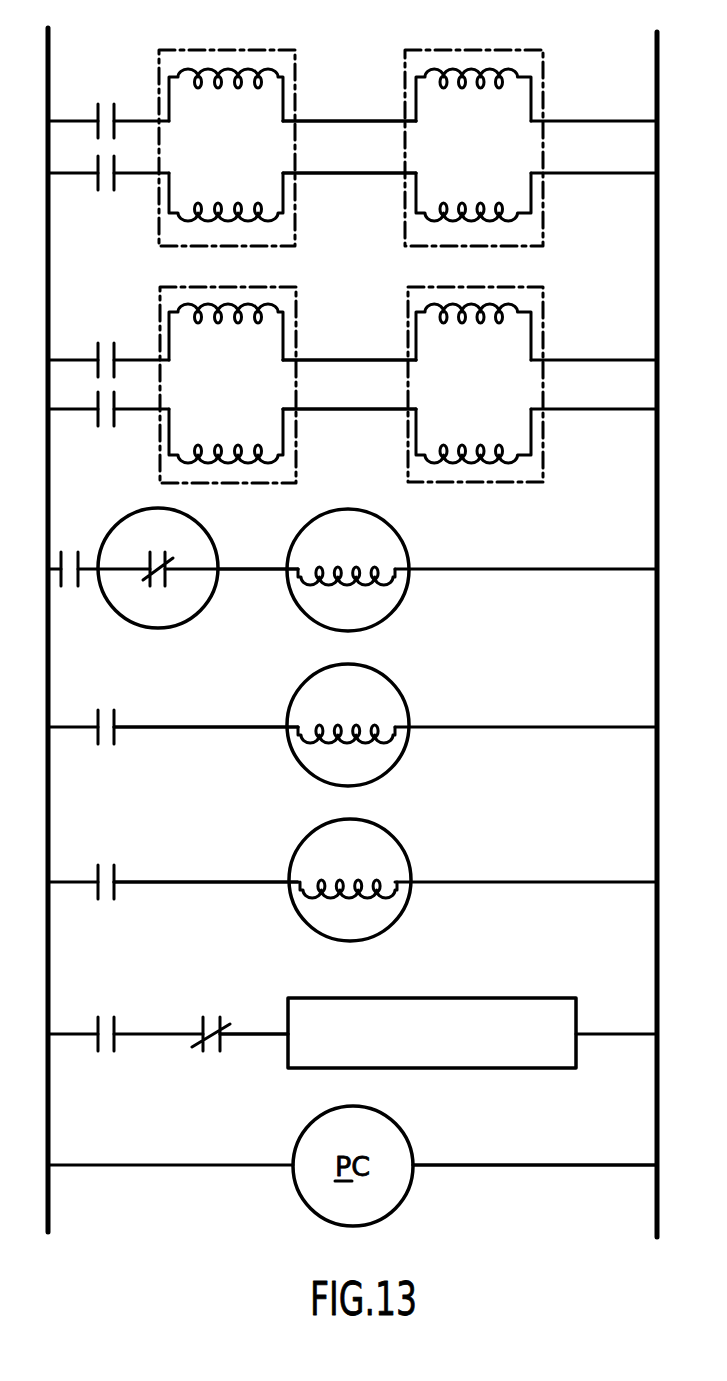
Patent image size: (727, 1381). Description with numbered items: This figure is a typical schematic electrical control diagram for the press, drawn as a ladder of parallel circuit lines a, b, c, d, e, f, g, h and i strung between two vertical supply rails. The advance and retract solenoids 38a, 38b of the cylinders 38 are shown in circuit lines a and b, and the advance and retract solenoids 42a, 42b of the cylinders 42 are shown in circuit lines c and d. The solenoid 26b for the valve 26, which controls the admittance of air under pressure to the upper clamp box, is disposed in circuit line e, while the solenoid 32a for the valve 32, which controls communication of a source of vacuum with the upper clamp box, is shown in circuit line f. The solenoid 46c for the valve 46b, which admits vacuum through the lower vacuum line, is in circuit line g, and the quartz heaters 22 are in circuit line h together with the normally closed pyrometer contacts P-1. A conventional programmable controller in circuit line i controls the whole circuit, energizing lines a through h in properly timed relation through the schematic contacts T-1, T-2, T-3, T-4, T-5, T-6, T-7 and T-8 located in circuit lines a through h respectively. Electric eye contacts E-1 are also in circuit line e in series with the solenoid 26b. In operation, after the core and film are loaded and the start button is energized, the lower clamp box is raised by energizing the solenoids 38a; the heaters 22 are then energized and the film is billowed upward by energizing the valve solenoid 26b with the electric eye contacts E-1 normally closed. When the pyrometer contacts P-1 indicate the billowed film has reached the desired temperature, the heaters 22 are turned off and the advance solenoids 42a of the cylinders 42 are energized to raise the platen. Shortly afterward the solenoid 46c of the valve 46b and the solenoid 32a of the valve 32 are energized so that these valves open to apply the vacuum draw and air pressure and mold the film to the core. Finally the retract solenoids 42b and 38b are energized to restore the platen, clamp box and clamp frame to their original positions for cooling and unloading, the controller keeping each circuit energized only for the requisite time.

The cylinders 38 is at (297, 103).
The advance solenoids 38a is at (266, 68).
The retract solenoids 38b is at (216, 212).
The cylinders 42 is at (298, 347).
The advance solenoids 42a is at (227, 302).
The retract solenoids 42b is at (227, 447).
The valve 26 is at (385, 515).
The solenoid 26b is at (375, 562).
The valve 32 is at (382, 677).
The solenoid 32a is at (375, 720).
The valve 46b is at (388, 832).
The solenoid 46c is at (378, 872).
The quartz heaters 22 is at (530, 1008).
The electric eye contacts E-1 is at (180, 565).
The pyrometer contacts P-1 is at (210, 1015).
The contacts T-1 is at (107, 105).
The contacts T-2 is at (104, 188).
The contacts T-3 is at (107, 348).
The contacts T-4 is at (106, 428).
The contacts T-5 is at (72, 547).
The contacts T-6 is at (104, 710).
The contacts T-7 is at (105, 863).
The contacts T-8 is at (105, 1015).
The circuit line a is at (352, 118).
The circuit line b is at (352, 171).
The circuit line c is at (364, 359).
The circuit line d is at (364, 408).
The circuit line e is at (246, 568).
The circuit line f is at (227, 725).
The circuit line g is at (242, 880).
The circuit line h is at (248, 1032).
The circuit line i is at (482, 1162).